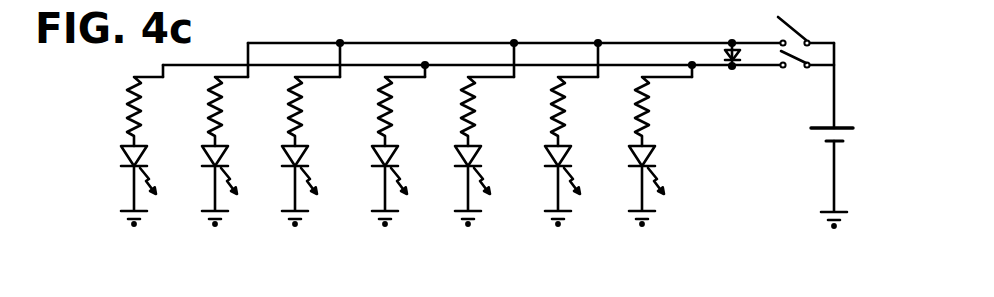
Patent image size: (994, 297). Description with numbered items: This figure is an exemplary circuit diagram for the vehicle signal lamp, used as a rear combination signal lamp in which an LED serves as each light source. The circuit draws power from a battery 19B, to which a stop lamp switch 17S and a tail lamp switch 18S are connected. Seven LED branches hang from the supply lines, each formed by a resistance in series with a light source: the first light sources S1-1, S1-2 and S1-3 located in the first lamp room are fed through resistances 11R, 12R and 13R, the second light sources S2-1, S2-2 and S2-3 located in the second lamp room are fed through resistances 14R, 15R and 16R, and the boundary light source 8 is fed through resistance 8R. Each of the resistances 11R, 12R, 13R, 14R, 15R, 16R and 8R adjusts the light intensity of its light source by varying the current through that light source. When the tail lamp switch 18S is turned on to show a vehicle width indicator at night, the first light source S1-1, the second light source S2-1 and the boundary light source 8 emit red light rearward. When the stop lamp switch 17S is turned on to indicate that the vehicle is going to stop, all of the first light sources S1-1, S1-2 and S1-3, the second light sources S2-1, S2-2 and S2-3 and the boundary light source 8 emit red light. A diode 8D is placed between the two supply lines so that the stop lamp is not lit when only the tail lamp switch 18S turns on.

The resistance 11R is at (119, 111).
The resistance 12R is at (203, 111).
The resistance 13R is at (289, 111).
The resistance 14R is at (376, 111).
The resistance 15R is at (462, 111).
The resistance 16R is at (549, 111).
The resistance 8R is at (646, 111).
The first light source S1-1 is at (118, 186).
The first light source S1-2 is at (211, 202).
The first light source S1-3 is at (292, 202).
The second light source S2-1 is at (369, 186).
The second light source S2-2 is at (464, 203).
The second light source S2-3 is at (558, 203).
The boundary light source 8 is at (638, 186).
The diode 8D is at (730, 76).
The stop lamp switch 17S is at (816, 27).
The tail lamp switch 18S is at (805, 78).
The battery 19B is at (814, 135).